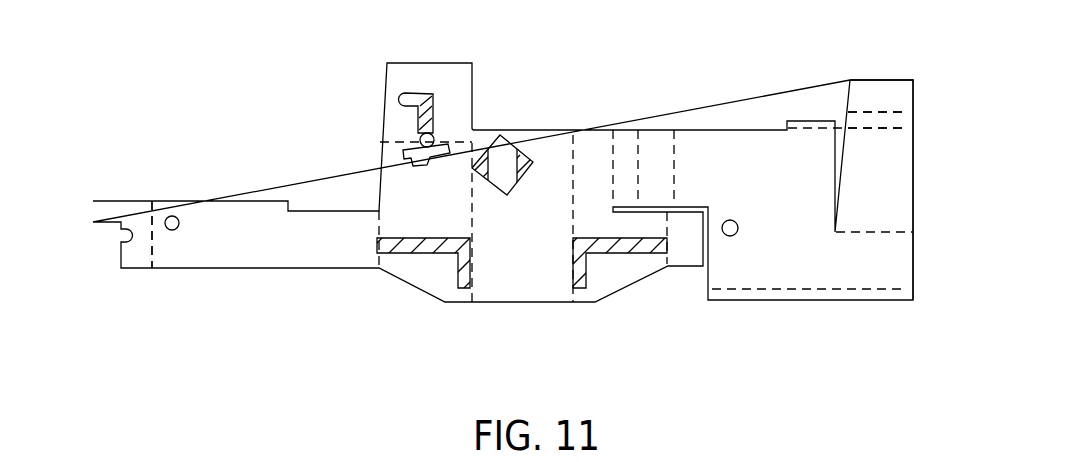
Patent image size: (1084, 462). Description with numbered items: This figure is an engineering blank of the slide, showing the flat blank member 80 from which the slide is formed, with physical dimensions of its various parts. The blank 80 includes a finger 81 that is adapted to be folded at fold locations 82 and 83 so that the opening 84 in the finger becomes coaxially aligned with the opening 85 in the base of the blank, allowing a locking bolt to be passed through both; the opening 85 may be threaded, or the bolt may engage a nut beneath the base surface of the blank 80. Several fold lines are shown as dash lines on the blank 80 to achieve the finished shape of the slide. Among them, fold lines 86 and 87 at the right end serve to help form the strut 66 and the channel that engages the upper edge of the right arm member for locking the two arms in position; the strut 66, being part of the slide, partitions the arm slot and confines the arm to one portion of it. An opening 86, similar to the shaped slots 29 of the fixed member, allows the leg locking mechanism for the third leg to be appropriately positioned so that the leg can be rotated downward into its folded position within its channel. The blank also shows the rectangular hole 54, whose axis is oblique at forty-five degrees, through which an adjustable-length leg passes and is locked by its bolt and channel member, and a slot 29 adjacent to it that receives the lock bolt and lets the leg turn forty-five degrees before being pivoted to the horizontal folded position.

The blank member 80 is at (476, 339).
The finger 81 is at (263, 252).
The fold line 82 is at (376, 228).
The fold line 83 is at (152, 242).
The opening 84 is at (172, 216).
The opening 85 is at (736, 222).
The fold line / opening 86 is at (425, 110).
The fold line 87 is at (906, 126).
The strut 66 is at (898, 177).
The shaped slot 29 is at (413, 160).
The rectangular hole 54 is at (523, 157).